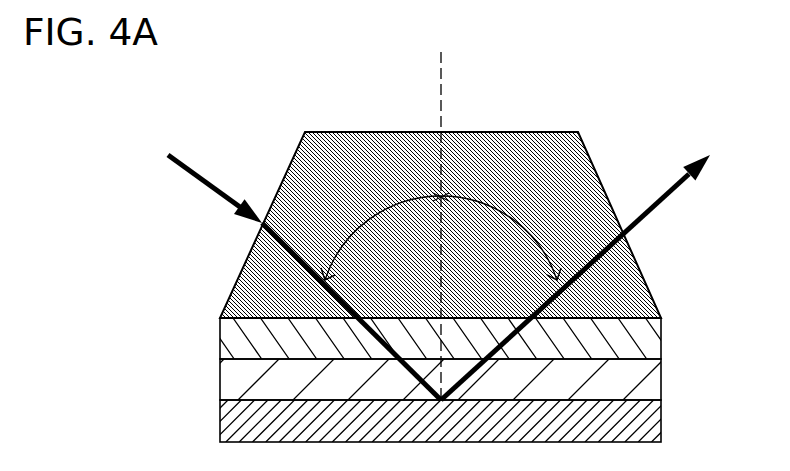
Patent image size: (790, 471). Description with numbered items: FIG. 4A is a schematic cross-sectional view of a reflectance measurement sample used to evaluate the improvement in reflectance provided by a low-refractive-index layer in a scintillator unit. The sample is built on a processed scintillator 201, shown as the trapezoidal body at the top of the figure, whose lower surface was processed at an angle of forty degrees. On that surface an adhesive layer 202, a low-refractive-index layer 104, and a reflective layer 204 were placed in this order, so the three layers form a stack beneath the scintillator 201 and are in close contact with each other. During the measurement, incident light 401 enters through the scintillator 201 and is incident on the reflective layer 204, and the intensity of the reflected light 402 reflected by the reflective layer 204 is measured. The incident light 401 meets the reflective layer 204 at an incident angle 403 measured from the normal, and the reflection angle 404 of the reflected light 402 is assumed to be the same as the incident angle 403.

The scintillator 201 is at (573, 162).
The adhesive layer 202 is at (640, 350).
The low-refractive-index layer 104 is at (662, 372).
The reflective layer 204 is at (640, 428).
The incident light 401 is at (212, 189).
The reflected light 402 is at (662, 195).
The incident angle 403 is at (369, 218).
The reflection angle 404 is at (502, 206).